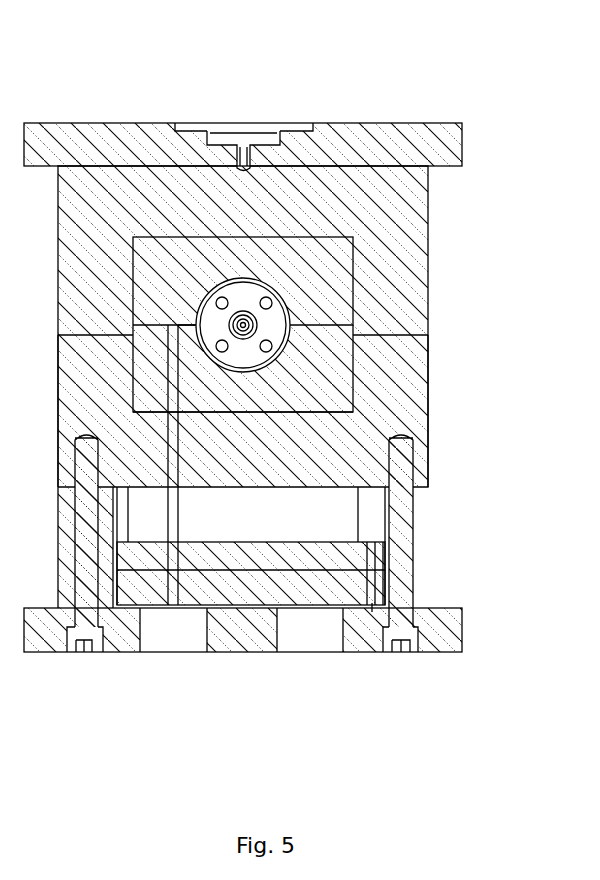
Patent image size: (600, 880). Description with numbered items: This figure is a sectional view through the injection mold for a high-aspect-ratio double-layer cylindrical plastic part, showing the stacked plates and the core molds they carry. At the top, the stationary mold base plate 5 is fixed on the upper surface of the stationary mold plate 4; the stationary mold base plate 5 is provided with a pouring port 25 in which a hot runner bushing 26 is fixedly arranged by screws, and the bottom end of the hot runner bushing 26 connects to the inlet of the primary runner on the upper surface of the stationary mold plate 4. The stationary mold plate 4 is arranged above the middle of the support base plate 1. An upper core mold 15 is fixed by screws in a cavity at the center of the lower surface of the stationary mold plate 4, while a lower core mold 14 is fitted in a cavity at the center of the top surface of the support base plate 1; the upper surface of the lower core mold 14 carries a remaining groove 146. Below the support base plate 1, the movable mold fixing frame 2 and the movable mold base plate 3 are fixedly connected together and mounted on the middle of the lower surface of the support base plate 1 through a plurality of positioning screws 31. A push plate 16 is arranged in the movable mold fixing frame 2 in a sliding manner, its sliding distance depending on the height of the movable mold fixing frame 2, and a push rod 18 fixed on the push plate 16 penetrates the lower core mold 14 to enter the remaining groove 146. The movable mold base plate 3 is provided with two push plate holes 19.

The support base plate 1 is at (393, 397).
The movable mold fixing frame 2 is at (65, 563).
The movable mold base plate 3 is at (235, 638).
The stationary mold plate 4 is at (398, 247).
The stationary mold base plate 5 is at (353, 143).
The lower core mold 14 is at (322, 357).
The upper core mold 15 is at (317, 292).
The push plate 16 is at (270, 585).
The push rod 18 is at (170, 515).
The push plate hole 19 is at (313, 637).
The pouring port 25 is at (290, 130).
The hot runner bushing 26 is at (253, 143).
The positioning screw 31 is at (402, 560).
The remaining groove 146 is at (185, 325).